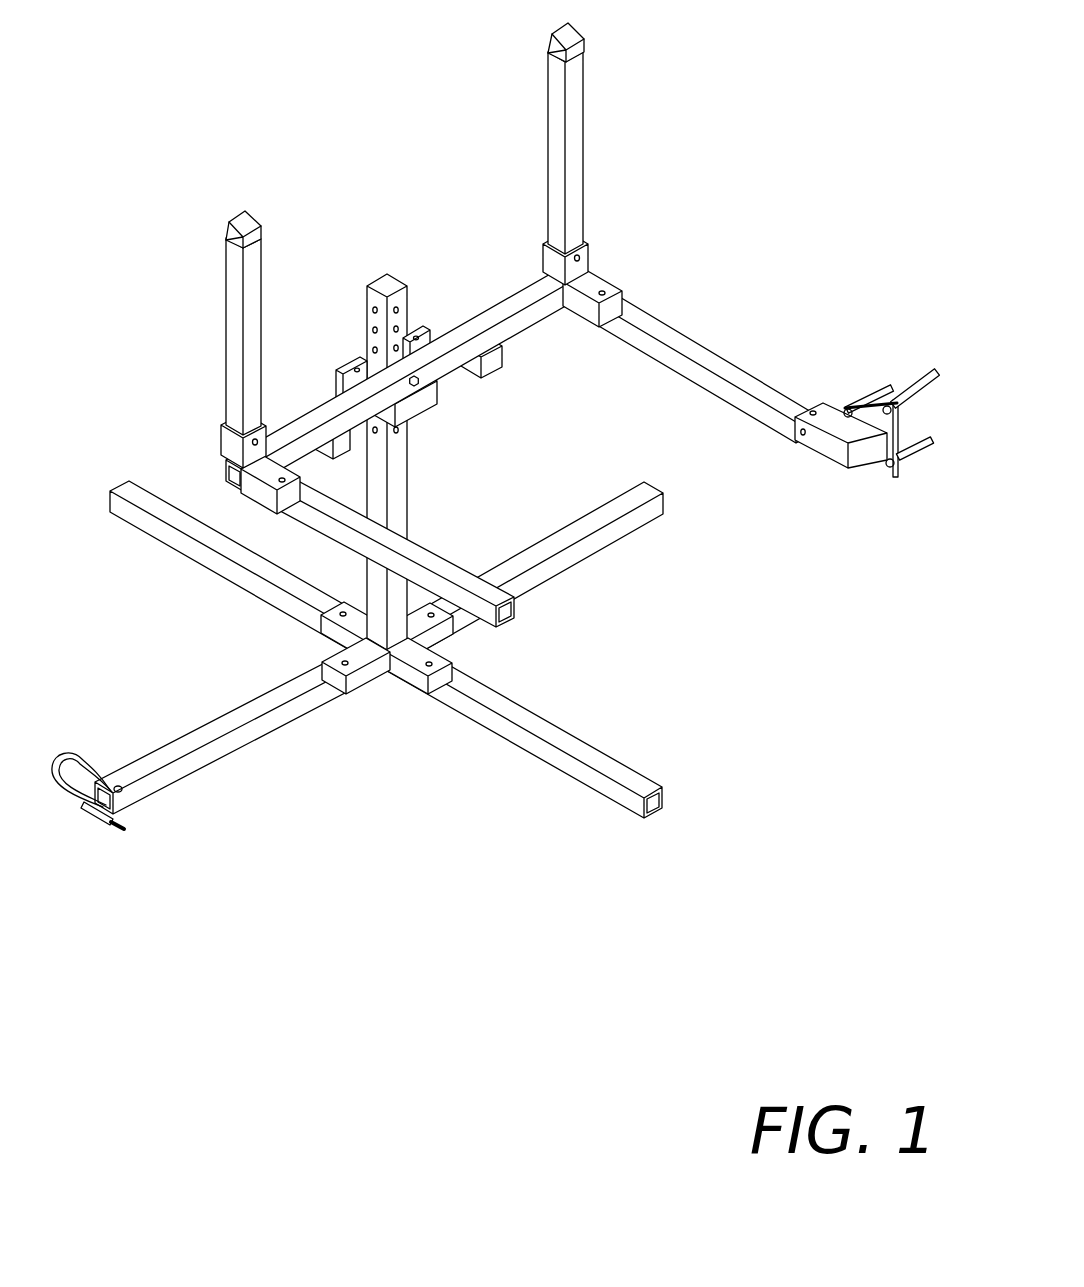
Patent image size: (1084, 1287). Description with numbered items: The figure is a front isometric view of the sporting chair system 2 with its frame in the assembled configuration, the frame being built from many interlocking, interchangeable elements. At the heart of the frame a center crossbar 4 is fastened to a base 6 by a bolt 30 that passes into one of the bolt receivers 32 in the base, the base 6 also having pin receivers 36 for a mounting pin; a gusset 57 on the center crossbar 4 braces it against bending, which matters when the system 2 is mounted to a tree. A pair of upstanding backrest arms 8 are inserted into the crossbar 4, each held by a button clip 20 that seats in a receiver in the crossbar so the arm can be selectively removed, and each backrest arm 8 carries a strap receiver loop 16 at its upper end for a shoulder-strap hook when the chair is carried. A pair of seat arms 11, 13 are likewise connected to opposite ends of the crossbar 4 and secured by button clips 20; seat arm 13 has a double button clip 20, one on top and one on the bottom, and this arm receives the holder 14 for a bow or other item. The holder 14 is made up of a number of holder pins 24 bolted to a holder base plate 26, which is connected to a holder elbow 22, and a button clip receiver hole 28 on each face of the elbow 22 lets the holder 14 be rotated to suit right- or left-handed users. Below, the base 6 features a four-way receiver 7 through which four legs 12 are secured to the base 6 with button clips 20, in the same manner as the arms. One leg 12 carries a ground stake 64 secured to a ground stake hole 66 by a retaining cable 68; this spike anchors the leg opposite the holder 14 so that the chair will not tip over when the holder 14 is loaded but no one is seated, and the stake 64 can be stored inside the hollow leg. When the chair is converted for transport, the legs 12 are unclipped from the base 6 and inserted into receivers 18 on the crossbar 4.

The sporting chair system 2 is at (772, 73).
The center crossbar 4 is at (453, 330).
The base 6 is at (410, 468).
The 4-way receiver 7 is at (373, 683).
The backrest arm 8 is at (549, 131).
The seat arm 11 is at (436, 557).
The leg 12 is at (577, 560).
The seat arm 13 is at (733, 356).
The holder 14 is at (847, 429).
The strap receiver loop 16 is at (551, 42).
The receiver 18 is at (497, 366).
The button clip 20 is at (604, 290).
The holder elbow 22 is at (836, 462).
The holder pin 24 is at (935, 455).
The holder base plate 26 is at (894, 478).
The button clip receiver hole 28 is at (802, 435).
The bolt 30 is at (424, 384).
The bolt receiver 32 is at (399, 330).
The pin receiver 36 is at (372, 330).
The gusset 57 is at (437, 424).
The ground stake 64 is at (112, 830).
The ground stake hole 66 is at (121, 785).
The retaining cable 68 is at (72, 757).